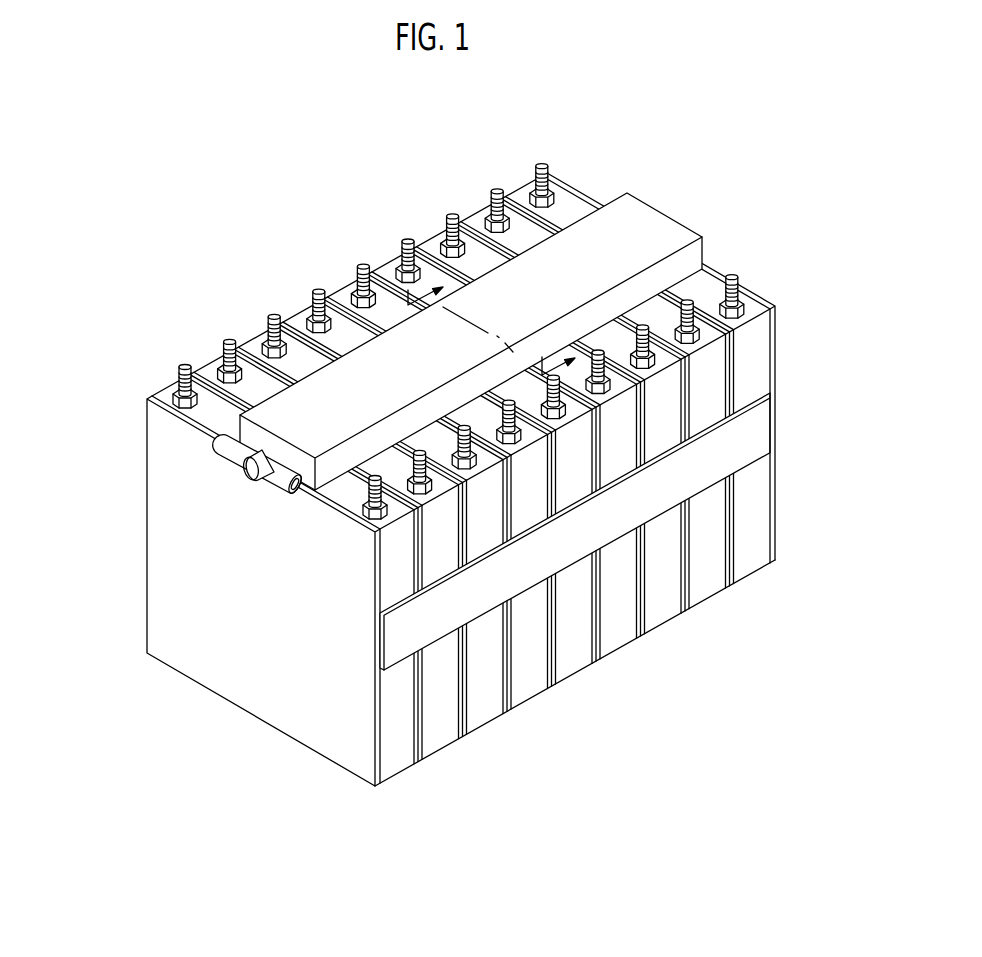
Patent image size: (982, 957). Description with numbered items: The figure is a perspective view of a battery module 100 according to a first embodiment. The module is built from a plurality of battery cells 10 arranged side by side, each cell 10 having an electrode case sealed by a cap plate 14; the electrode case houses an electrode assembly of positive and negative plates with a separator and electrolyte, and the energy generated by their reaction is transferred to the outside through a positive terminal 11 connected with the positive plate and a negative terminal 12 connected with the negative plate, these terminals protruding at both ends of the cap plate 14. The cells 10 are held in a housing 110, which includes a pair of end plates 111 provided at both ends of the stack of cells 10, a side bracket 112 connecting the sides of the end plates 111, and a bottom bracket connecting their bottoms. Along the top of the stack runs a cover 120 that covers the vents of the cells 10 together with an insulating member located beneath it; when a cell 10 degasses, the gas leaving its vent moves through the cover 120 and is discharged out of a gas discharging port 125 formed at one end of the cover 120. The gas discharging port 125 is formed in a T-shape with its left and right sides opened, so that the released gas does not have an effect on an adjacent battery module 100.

The battery module 100 is at (261, 256).
The battery cell 10 is at (716, 566).
The positive terminal 11 is at (544, 164).
The negative terminal 12 is at (735, 276).
The cap plate 14 is at (750, 313).
The housing 110 is at (254, 804).
The end plate 111 is at (162, 633).
The side bracket 112 is at (403, 640).
The cover 120 is at (657, 223).
The gas discharging port 125 is at (222, 444).